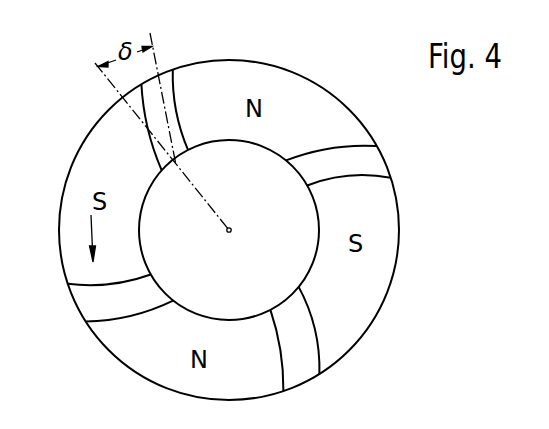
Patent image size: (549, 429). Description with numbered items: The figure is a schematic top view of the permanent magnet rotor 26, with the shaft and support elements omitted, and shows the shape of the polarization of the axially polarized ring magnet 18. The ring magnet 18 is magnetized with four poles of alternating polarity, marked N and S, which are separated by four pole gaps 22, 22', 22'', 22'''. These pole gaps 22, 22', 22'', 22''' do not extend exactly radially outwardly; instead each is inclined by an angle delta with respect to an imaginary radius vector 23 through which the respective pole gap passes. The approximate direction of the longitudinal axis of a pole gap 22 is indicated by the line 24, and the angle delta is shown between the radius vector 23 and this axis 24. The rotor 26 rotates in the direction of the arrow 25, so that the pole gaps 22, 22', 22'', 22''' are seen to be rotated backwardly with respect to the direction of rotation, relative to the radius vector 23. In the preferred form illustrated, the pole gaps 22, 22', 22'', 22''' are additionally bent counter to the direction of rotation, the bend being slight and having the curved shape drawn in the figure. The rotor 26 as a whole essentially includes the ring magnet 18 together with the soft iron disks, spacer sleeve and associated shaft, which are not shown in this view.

The ring magnet 18 is at (219, 216).
The pole gap 22 is at (353, 166).
The pole gap 22' is at (192, 91).
The pole gap 22'' is at (95, 298).
The pole gap 22''' is at (302, 353).
The radius vector 23 is at (149, 147).
The longitudinal axis direction of pole gap 24 is at (155, 58).
The arrow indicating direction of rotation 25 is at (104, 238).
The rotor 26 is at (62, 182).